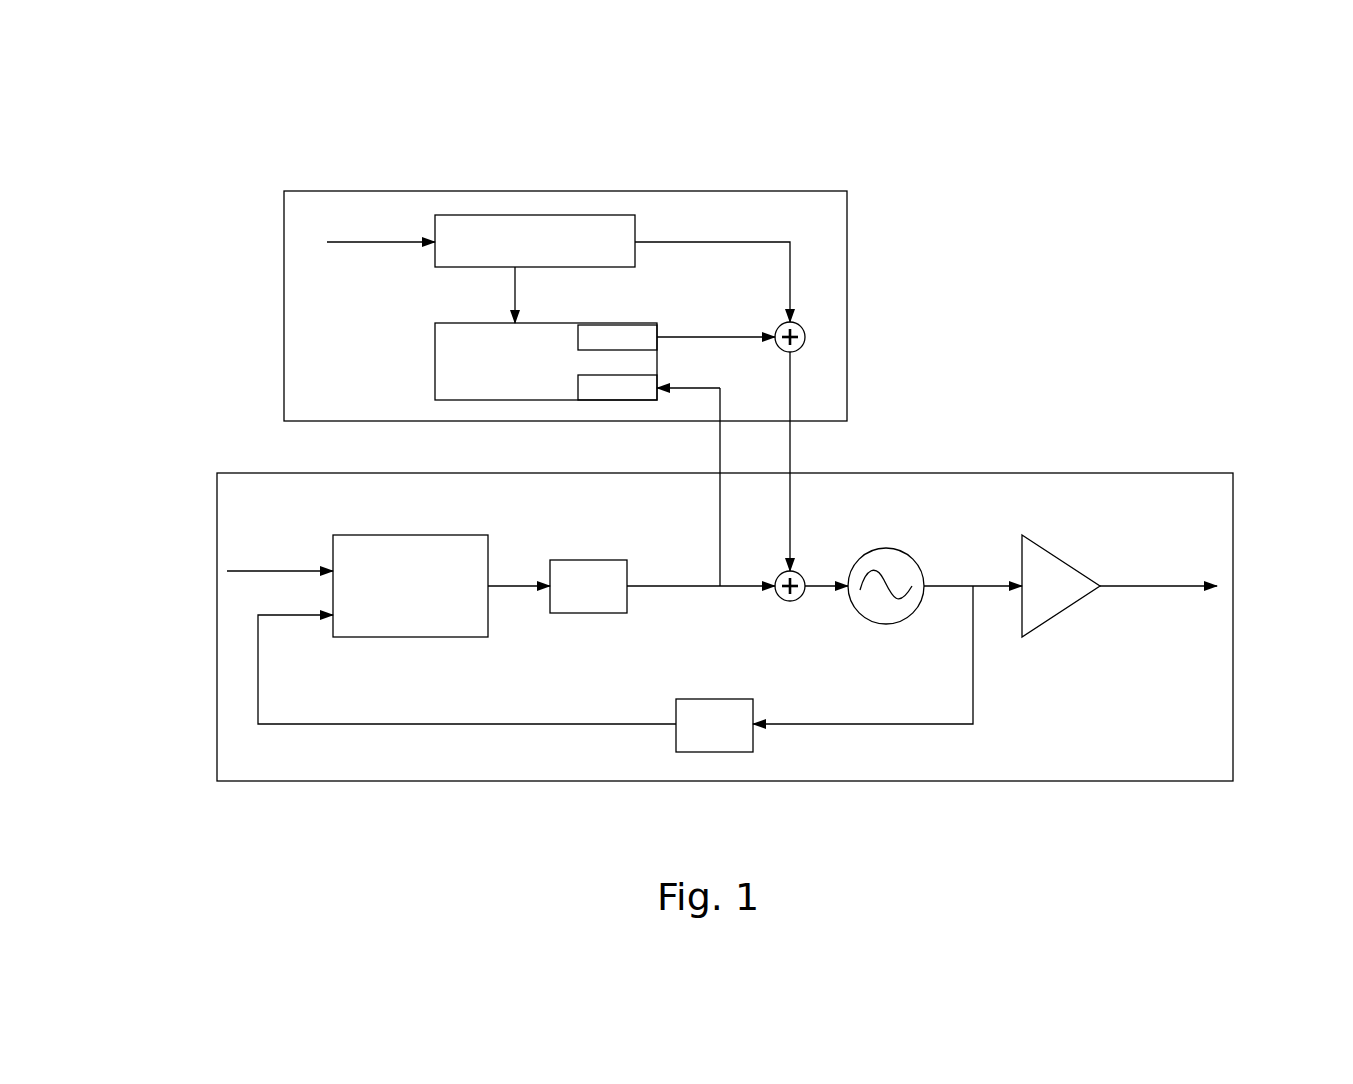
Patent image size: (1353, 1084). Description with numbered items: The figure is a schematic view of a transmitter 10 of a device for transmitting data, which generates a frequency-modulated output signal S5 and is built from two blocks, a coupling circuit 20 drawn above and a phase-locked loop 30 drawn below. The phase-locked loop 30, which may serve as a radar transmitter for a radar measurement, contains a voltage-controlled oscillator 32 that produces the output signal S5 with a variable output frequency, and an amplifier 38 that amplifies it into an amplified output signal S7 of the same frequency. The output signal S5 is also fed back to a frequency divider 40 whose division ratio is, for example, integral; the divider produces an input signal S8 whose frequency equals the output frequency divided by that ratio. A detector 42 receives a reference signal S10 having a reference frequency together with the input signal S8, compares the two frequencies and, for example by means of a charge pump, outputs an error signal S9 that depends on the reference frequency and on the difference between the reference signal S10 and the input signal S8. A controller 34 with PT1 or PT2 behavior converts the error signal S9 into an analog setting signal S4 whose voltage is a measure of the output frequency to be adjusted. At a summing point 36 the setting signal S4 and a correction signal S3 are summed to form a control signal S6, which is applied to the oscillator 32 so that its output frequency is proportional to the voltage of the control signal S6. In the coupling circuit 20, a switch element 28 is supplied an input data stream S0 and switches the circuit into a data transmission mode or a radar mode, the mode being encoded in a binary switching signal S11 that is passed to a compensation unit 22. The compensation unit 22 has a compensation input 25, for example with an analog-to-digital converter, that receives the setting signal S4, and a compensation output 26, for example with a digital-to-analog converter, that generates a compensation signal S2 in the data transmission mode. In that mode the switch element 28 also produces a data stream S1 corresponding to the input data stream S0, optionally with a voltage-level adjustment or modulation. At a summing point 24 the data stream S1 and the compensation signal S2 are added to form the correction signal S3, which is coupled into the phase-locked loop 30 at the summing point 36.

The transmitter 10 is at (1045, 202).
The coupling circuit 20 is at (745, 213).
The compensation unit 22 is at (518, 377).
The summing point 24 is at (810, 322).
The compensation input 25 is at (634, 400).
The compensation output 26 is at (634, 350).
The switch element 28 is at (555, 257).
The phase-locked loop 30 is at (1127, 750).
The voltage-controlled oscillator 32 is at (898, 572).
The controller 34 is at (609, 603).
The summing point 36 is at (777, 598).
The amplifier 38 is at (1063, 601).
The frequency divider 40 is at (735, 742).
The detector 42 is at (431, 602).
The input data stream S0 is at (353, 243).
The data stream S1 is at (790, 272).
The compensation signal S2 is at (685, 337).
The correction signal S3 is at (790, 452).
The setting signal S4 is at (677, 586).
The output signal S5 is at (993, 590).
The control signal S6 is at (813, 578).
The amplified output signal S7 is at (1127, 588).
The input signal S8 is at (403, 724).
The error signal S9 is at (517, 586).
The reference signal S10 is at (268, 571).
The switching signal S11 is at (515, 290).